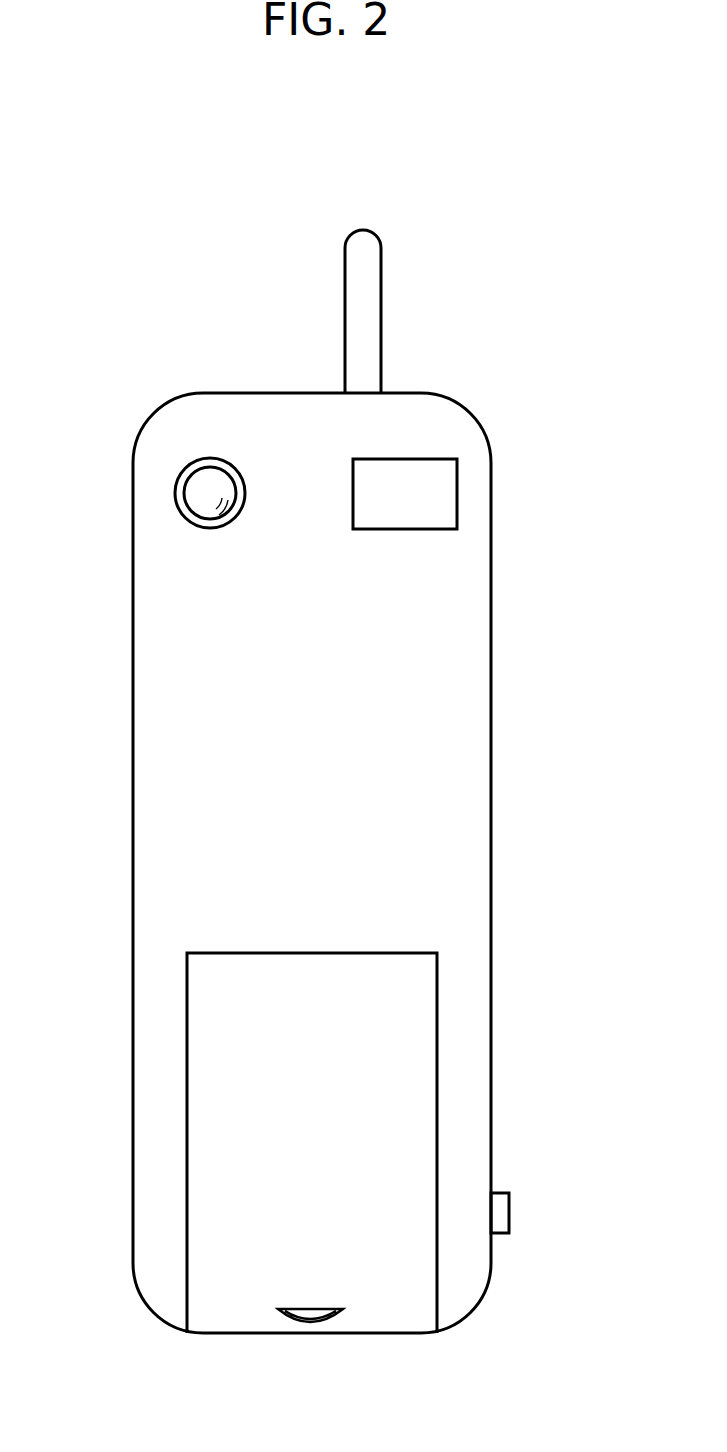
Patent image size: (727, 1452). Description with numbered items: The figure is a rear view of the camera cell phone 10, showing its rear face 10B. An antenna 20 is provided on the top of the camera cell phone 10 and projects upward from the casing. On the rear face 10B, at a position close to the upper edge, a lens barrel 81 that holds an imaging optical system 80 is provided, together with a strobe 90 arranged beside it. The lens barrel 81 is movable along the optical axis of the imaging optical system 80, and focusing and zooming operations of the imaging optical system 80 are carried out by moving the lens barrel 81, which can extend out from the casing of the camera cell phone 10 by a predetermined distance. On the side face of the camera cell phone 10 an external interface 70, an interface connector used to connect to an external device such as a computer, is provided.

The camera cell phone 10 is at (512, 373).
The rear face 10B is at (457, 683).
The antenna 20 is at (383, 272).
The external interface 70 is at (510, 1213).
The imaging optical system 80 is at (197, 493).
The lens barrel 81 is at (210, 458).
The strobe 90 is at (440, 493).